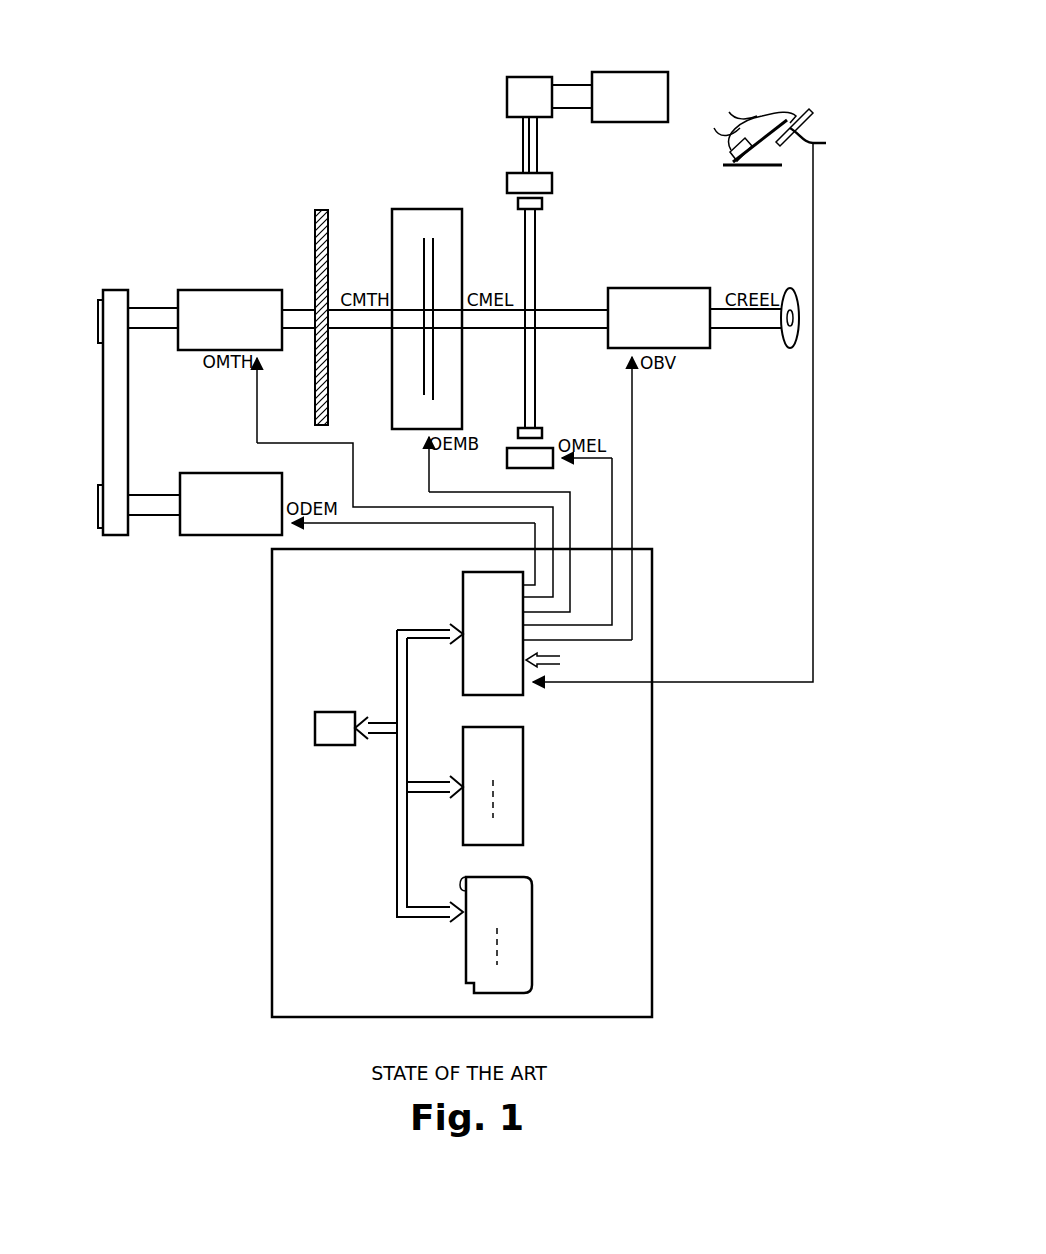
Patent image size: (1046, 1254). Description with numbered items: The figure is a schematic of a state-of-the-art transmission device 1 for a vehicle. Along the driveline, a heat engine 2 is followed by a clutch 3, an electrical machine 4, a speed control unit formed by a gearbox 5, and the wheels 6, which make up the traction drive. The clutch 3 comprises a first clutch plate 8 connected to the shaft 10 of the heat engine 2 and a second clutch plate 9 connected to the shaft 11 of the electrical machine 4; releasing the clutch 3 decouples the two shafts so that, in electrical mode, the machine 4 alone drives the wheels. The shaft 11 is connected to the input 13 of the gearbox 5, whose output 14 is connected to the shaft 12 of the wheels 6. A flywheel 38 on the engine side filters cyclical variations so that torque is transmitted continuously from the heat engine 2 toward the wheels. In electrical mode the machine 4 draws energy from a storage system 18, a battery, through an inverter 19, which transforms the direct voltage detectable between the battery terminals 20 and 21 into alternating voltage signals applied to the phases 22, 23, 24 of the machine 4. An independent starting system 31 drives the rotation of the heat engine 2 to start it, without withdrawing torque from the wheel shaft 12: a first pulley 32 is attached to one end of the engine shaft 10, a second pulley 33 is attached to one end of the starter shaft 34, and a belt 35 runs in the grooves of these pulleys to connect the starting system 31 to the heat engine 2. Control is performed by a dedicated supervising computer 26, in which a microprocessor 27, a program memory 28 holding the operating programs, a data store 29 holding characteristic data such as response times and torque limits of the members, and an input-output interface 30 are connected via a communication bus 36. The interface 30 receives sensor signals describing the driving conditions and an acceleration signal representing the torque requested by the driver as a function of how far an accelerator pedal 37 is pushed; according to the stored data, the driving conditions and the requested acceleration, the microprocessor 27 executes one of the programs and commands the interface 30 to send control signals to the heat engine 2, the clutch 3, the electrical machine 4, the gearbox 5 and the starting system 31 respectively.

The transmission device 1 is at (212, 163).
The heat engine 2 is at (200, 290).
The clutch 3 is at (428, 209).
The electrical machine 4 is at (553, 258).
The gearbox 5 is at (660, 288).
The wheels 6 is at (789, 288).
The first clutch plate 8 is at (424, 385).
The second clutch plate 9 is at (433, 362).
The shaft of the heat engine 10 is at (358, 330).
The shaft of the electrical machine 11 is at (558, 330).
The shaft of the wheels 12 is at (735, 330).
The input of the gearbox 13 is at (615, 328).
The output of the gearbox 14 is at (712, 300).
The storage system 18 is at (627, 72).
The inverter 19 is at (530, 77).
The battery terminal 20 is at (568, 85).
The battery terminal 21 is at (575, 110).
The phase of the machine 22 is at (523, 125).
The phase of the machine 23 is at (528, 155).
The phase of the machine 24 is at (538, 135).
The supervising computer 26 is at (652, 876).
The microprocessor 27 is at (335, 745).
The program memory 28 is at (532, 926).
The data store 29 is at (523, 773).
The input-output interface 30 is at (463, 600).
The starting system 31 is at (200, 535).
The first pulley 32 is at (98, 320).
The second pulley 33 is at (98, 510).
The shaft of the starting system 34 is at (152, 495).
The belt 35 is at (128, 396).
The communication bus 36 is at (397, 850).
The accelerator pedal 37 is at (800, 113).
The flywheel 38 is at (315, 218).